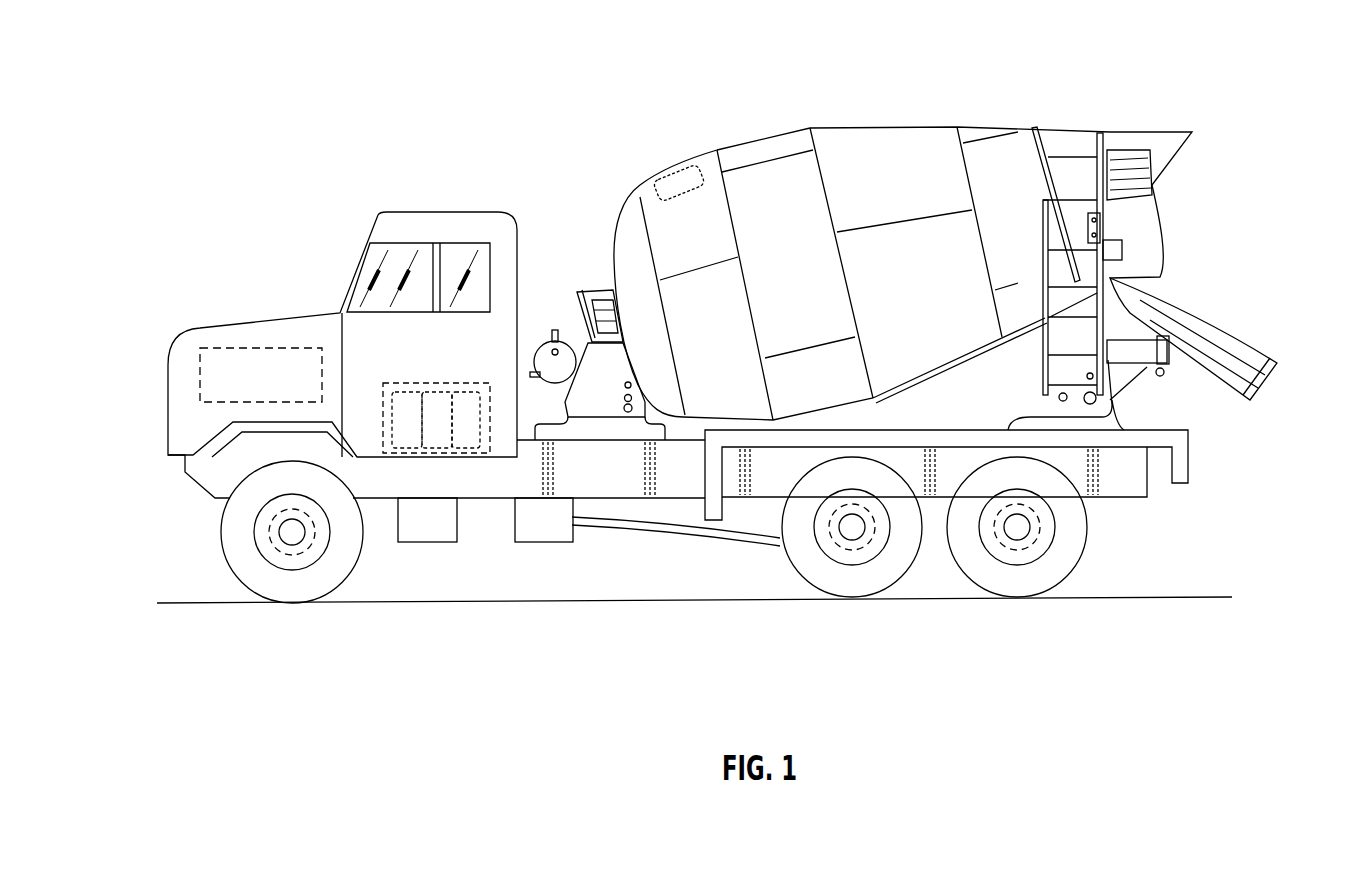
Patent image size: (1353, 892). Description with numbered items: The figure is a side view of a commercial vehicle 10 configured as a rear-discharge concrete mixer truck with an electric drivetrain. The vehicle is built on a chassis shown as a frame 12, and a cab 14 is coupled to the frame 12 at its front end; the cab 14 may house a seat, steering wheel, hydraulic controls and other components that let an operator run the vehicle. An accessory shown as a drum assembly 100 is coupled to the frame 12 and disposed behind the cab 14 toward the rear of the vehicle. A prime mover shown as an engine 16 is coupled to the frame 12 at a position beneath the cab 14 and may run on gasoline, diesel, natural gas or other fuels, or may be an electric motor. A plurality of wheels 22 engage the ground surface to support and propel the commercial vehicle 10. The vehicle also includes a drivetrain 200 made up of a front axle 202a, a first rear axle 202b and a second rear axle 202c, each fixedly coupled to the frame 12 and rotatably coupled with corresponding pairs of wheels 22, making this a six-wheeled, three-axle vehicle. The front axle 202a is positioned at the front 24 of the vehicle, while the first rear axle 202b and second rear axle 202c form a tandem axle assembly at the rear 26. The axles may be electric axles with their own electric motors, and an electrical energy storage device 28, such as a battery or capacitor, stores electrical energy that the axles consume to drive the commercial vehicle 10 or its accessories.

The commercial vehicle 10 is at (190, 140).
The frame 12 is at (607, 485).
The cab 14 is at (313, 325).
The engine 16 is at (222, 352).
The wheels 22 is at (240, 563).
The front 24 is at (125, 425).
The rear 26 is at (1278, 404).
The electrical energy storage device 28 is at (380, 405).
The drum assembly 100 is at (771, 120).
The drivetrain 200 is at (200, 519).
The front axle 202a is at (317, 530).
The first rear axle 202b is at (853, 550).
The second rear axle 202c is at (1020, 550).